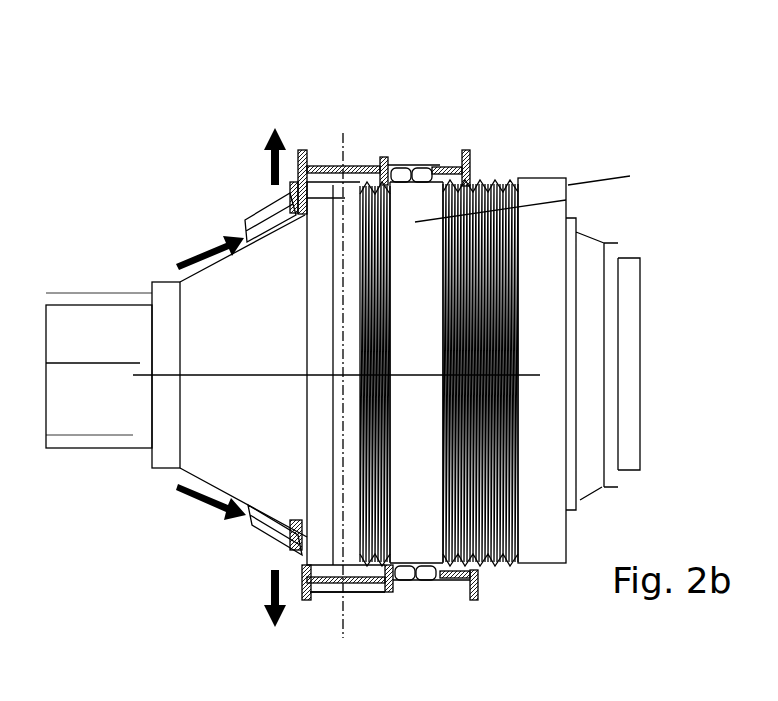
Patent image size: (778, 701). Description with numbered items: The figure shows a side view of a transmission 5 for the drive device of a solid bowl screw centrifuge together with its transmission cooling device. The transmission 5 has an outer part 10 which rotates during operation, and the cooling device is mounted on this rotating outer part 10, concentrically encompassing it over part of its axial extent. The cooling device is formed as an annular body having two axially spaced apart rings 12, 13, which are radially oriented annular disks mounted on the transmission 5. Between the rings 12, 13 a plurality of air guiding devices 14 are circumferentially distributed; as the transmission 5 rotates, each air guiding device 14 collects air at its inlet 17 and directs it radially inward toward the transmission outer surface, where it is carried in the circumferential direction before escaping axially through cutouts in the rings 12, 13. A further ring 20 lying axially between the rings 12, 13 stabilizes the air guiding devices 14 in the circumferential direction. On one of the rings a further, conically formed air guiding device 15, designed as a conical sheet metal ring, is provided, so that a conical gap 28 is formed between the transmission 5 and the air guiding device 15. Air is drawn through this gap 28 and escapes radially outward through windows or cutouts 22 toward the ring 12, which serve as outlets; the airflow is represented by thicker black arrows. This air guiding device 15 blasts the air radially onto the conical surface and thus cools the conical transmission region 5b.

The transmission 5 is at (567, 170).
The conical transmission region 5b is at (257, 287).
The outer part 10 is at (545, 553).
The ring 12 is at (300, 150).
The ring 13 is at (468, 160).
The air guiding device 14 is at (320, 160).
The air guiding device 15 is at (248, 525).
The inlet 17 is at (365, 570).
The further ring 20 is at (383, 160).
The window or cutout 22 is at (262, 540).
The conical gap 28 is at (262, 212).